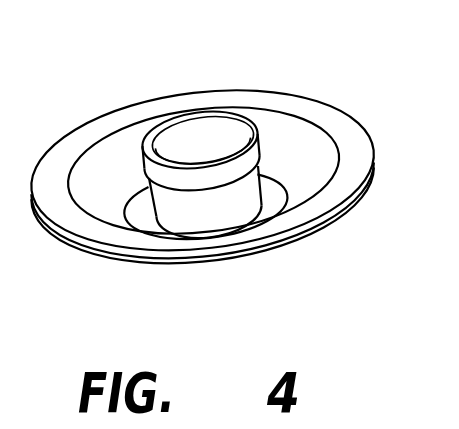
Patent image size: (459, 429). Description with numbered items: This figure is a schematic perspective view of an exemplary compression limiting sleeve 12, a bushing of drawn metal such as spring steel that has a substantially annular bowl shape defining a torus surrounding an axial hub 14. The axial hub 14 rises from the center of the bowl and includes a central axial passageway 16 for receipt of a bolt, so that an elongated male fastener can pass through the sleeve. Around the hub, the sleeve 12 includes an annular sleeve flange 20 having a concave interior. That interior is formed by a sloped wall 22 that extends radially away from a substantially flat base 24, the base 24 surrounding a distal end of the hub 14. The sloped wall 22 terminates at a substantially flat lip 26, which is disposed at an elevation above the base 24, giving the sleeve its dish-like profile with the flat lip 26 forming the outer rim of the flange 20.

The compression limiting sleeve 12 is at (214, 156).
The axial hub 14 is at (137, 166).
The central axial passageway 16 is at (197, 152).
The annular sleeve flange 20 is at (247, 256).
The sloped wall 22 is at (310, 152).
The substantially flat base 24 is at (137, 216).
The substantially flat lip 26 is at (275, 98).